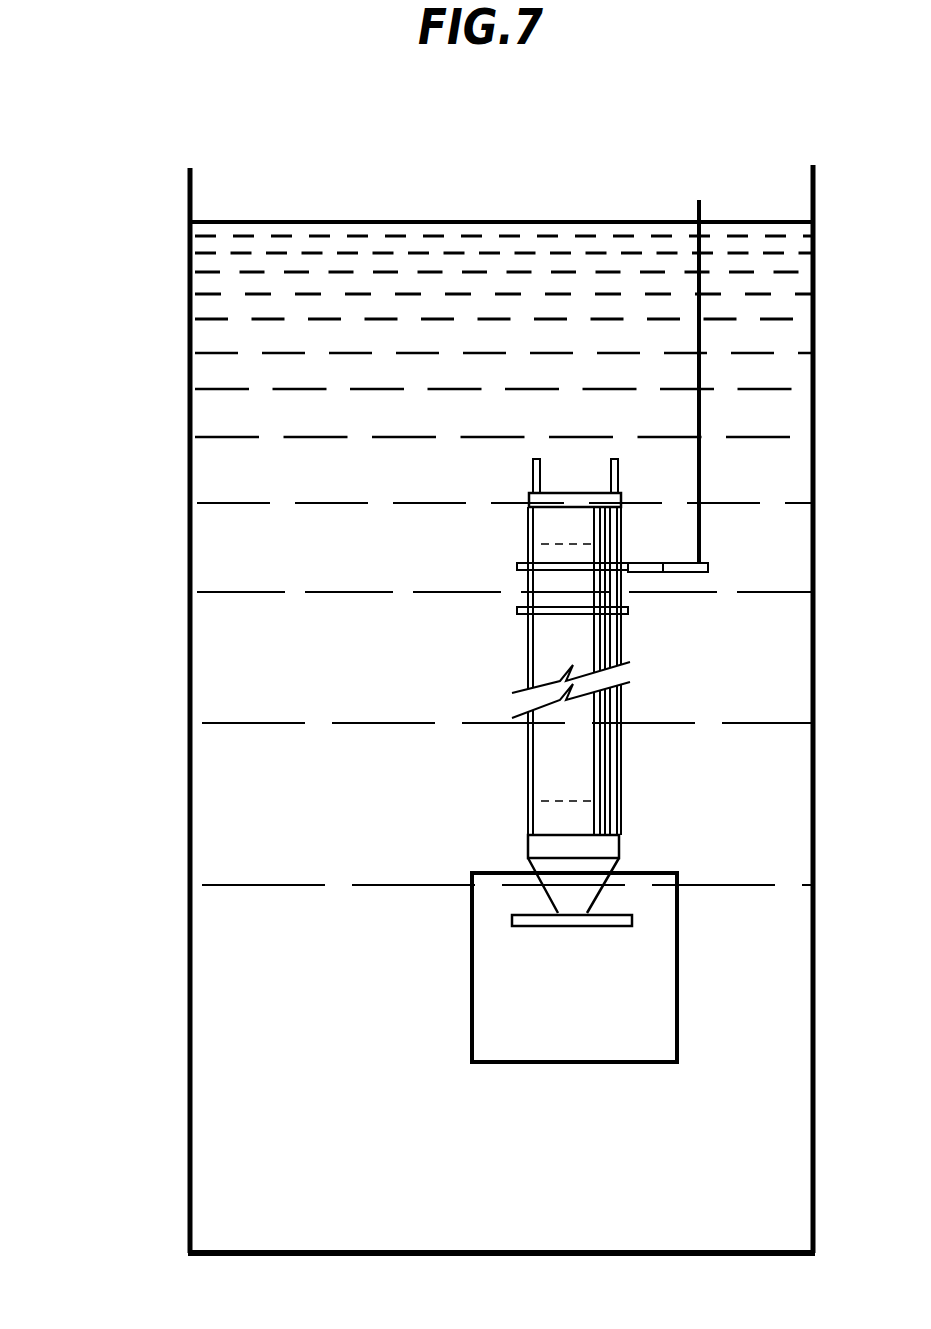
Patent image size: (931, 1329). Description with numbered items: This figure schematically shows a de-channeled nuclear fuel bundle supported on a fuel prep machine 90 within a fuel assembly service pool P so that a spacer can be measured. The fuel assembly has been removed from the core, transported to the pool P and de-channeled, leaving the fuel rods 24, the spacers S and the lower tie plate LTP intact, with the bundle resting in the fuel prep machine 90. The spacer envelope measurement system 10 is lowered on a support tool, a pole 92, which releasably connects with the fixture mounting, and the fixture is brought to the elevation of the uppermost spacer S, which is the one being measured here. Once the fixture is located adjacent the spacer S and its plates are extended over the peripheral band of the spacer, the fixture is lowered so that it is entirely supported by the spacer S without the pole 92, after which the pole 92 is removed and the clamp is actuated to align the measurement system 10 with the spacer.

The fuel assembly service pool P is at (100, 566).
The pole 92 is at (697, 262).
The spacer envelope measurement system 10 is at (650, 573).
The nuclear fuel rods 24 is at (620, 813).
The spacers S is at (628, 611).
The lower tie plate LTP is at (545, 848).
The fuel prep machine 90 is at (472, 982).